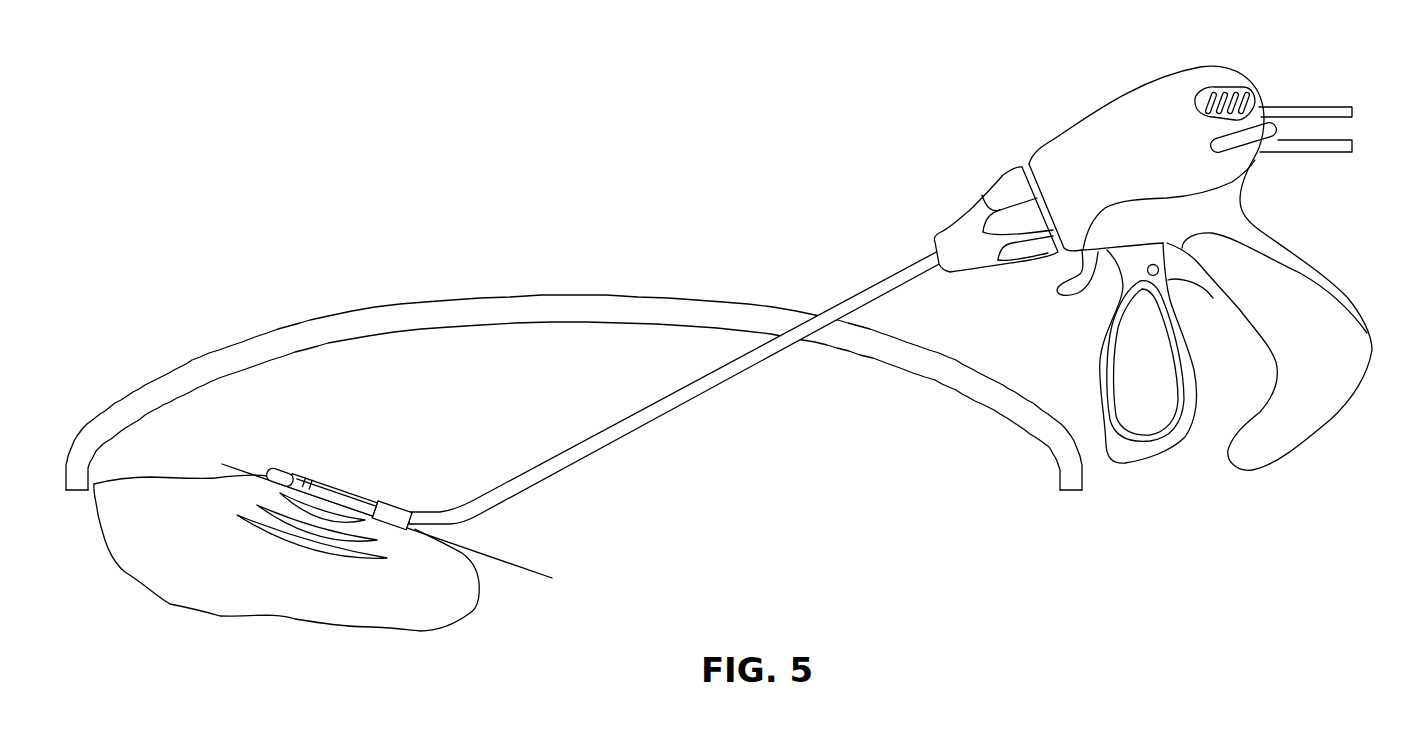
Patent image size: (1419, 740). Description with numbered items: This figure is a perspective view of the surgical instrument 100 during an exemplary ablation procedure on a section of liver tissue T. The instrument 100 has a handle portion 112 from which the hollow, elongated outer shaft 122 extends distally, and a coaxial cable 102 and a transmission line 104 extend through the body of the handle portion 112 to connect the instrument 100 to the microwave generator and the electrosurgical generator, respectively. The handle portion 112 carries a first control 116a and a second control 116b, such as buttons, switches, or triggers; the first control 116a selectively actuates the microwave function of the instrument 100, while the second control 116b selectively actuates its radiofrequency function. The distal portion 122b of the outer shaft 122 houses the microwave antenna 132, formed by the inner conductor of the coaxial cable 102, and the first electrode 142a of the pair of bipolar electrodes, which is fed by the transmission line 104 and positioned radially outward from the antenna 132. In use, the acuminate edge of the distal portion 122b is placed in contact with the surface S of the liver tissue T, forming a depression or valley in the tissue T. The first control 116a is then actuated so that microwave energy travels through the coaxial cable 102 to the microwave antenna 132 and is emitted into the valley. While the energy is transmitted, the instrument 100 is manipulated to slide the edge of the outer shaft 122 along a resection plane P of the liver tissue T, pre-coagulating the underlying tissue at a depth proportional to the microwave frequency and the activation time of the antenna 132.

The tissue ablation instrument 100 is at (798, 147).
The coaxial cable 102 is at (1328, 148).
The transmission line 104 is at (1328, 112).
The handle portion 112 is at (1100, 110).
The first control 116a is at (1055, 289).
The second control 116b is at (1104, 413).
The outer shaft 122 is at (678, 405).
The distal portion of the outer shaft 122b is at (398, 509).
The microwave antenna 132 is at (340, 490).
The first electrode 142a is at (307, 478).
The tissue surface S is at (115, 477).
The liver tissue T is at (175, 500).
The resection plane P is at (531, 566).